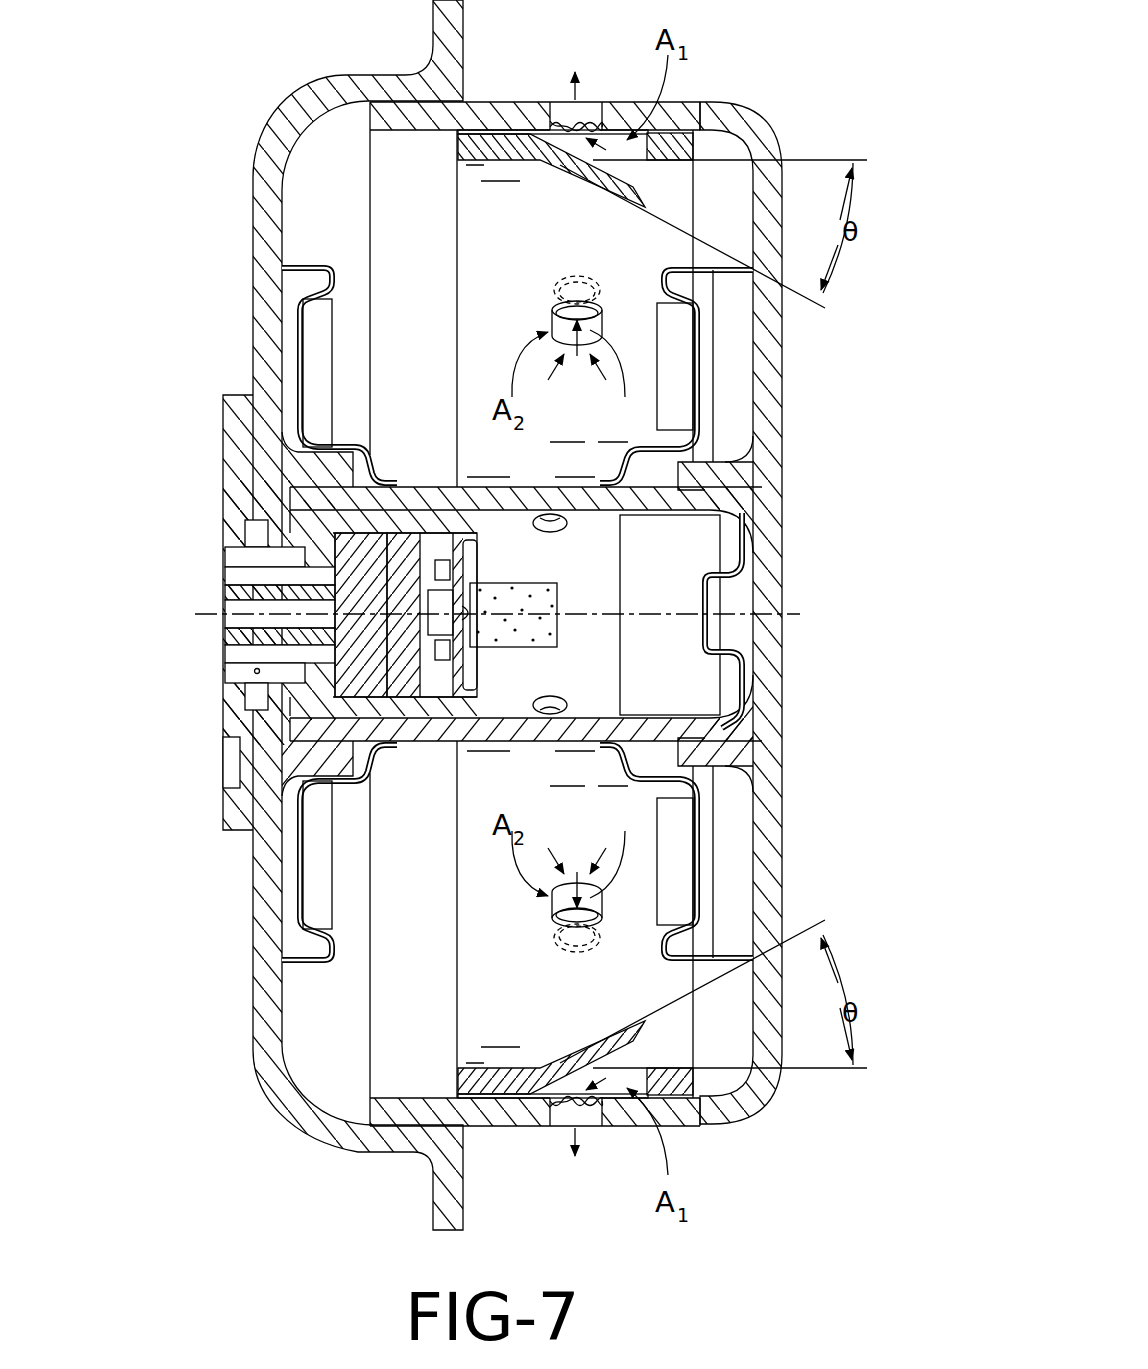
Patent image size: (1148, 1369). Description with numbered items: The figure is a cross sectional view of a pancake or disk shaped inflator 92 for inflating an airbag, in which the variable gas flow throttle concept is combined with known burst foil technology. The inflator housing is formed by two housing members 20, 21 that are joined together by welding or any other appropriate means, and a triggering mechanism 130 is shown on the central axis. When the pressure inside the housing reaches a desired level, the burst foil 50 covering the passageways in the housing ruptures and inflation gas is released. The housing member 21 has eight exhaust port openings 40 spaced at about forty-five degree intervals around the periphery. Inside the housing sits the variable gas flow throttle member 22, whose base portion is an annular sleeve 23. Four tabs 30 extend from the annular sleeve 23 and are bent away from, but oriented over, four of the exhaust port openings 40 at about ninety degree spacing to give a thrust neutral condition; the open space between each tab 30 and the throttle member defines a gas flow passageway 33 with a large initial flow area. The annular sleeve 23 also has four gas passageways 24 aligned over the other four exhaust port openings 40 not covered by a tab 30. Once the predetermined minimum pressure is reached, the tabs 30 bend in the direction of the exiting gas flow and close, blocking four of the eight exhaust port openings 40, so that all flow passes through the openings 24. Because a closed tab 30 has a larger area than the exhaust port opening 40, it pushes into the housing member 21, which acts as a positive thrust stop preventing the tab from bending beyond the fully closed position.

The housing member 20 is at (272, 132).
The housing member 21 is at (718, 1116).
The variable gas flow throttle member 22 is at (547, 167).
The annular sleeve 23 is at (487, 332).
The gas passageways 24 is at (563, 305).
The tabs 30 is at (602, 189).
The gas flow passageway 33 is at (615, 150).
The exhaust port openings 40 is at (563, 112).
The burst foil 50 is at (590, 125).
The inflator 92 is at (182, 216).
The triggering mechanism 130 is at (268, 586).